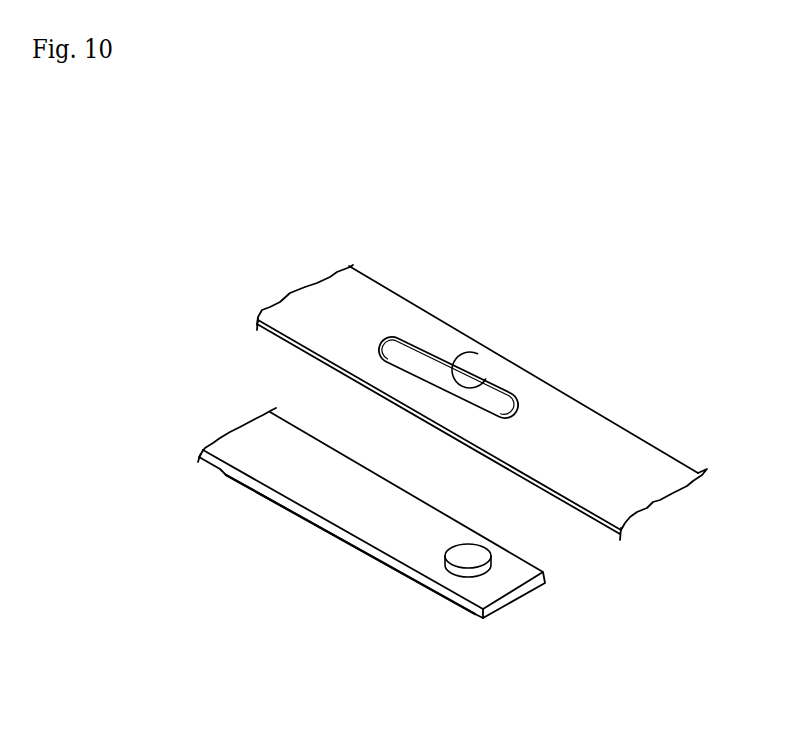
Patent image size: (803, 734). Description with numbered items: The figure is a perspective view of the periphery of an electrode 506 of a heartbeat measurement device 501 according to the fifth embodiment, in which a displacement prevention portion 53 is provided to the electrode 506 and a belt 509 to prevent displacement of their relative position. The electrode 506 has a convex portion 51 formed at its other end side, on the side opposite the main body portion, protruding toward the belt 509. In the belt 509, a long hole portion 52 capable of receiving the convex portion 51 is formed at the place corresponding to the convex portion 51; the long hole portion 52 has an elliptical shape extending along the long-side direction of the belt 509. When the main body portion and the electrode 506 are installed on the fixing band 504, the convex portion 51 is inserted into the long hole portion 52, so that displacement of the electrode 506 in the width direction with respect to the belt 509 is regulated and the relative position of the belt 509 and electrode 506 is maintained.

The fixing band 504 is at (410, 270).
The heartbeat measurement device 501 is at (582, 300).
The belt 509 is at (456, 330).
The long hole portion 52 is at (478, 354).
The convex portion 51 is at (468, 565).
The displacement prevention portion 53 is at (567, 510).
The electrode 506 is at (300, 512).